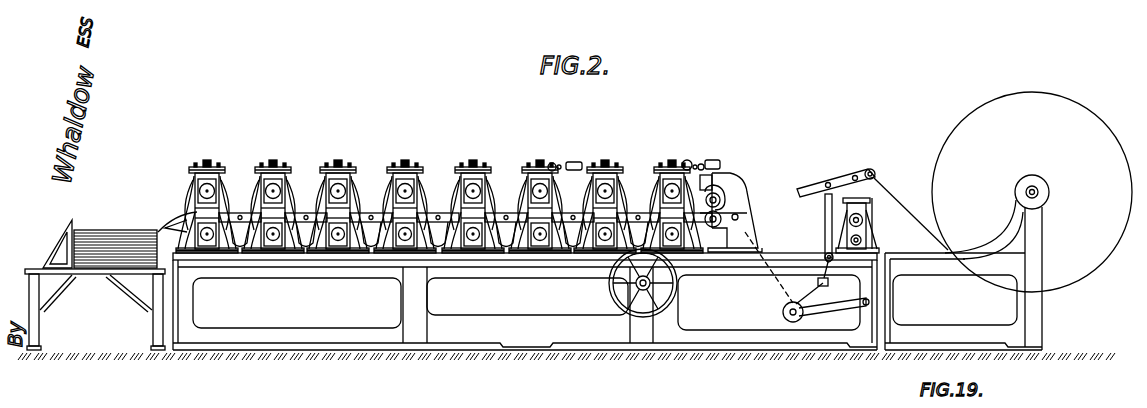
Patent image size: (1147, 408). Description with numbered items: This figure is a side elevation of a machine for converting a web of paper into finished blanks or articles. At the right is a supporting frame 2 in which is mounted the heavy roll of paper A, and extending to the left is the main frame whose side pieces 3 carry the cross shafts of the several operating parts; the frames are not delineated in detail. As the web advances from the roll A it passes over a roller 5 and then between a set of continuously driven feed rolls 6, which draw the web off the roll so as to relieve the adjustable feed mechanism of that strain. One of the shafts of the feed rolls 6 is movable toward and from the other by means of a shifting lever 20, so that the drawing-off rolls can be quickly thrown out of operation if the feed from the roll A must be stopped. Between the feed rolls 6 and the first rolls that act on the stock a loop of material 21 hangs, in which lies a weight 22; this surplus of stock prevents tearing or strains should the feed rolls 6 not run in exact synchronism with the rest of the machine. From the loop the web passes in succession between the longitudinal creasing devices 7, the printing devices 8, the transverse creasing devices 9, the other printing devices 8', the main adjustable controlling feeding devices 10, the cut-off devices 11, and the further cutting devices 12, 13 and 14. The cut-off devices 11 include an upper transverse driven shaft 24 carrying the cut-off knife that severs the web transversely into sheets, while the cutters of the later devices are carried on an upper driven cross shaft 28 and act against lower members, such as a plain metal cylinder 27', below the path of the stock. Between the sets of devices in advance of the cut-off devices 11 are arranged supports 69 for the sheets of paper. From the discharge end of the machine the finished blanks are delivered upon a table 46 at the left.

The cutting devices 14 is at (207, 195).
The cutting devices 13 is at (273, 195).
The cutting devices 12 is at (338, 195).
The cut-off devices 11 is at (405, 194).
The main adjustable controlling feeding devices 10 is at (473, 194).
The printing devices 8' is at (545, 195).
The transverse creasing devices 9 is at (605, 194).
The printing devices 8 is at (680, 194).
The longitudinal creasing devices 7 is at (731, 212).
The shifting lever 20 is at (838, 182).
The roller 5 is at (875, 170).
The feed rolls 6 is at (871, 236).
The upper driven cross shaft 28 is at (266, 186).
The supports for the sheets of paper 69 is at (302, 212).
The upper transverse driven shaft 24 is at (354, 183).
The lower cylinder 27' is at (370, 243).
The side pieces 3 is at (521, 270).
The loop of material 21 is at (772, 297).
The weight 22 is at (824, 322).
The supporting frame 2 is at (957, 270).
The roll of paper A is at (1032, 192).
The table 46 is at (95, 285).